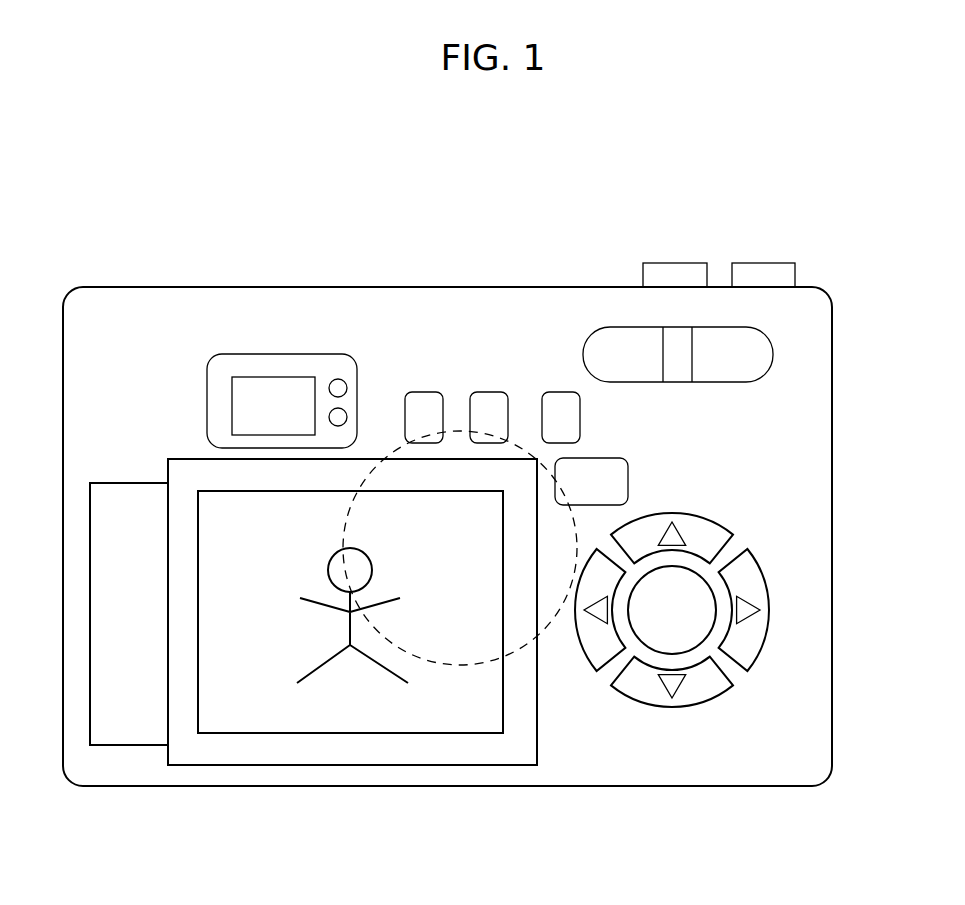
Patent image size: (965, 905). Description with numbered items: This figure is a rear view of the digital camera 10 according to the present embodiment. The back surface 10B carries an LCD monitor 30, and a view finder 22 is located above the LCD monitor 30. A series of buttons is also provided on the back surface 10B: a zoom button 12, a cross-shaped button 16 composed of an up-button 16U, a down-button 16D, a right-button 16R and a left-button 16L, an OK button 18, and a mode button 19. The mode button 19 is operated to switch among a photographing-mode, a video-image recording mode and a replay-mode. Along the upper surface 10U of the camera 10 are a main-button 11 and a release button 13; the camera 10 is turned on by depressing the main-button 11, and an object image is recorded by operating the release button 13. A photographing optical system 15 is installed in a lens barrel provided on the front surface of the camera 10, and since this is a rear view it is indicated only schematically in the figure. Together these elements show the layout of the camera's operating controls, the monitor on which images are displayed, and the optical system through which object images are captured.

The digital camera 10 is at (851, 276).
The upper surface 10U is at (402, 286).
The back surface 10B is at (805, 697).
The main-button 11 is at (764, 263).
The zoom button 12 is at (773, 350).
The release button 13 is at (678, 263).
The photographing optical system 15 is at (523, 440).
The cross-shaped button 16 is at (725, 698).
The up-button 16U is at (703, 518).
The right-button 16R is at (760, 570).
The down-button 16D is at (673, 706).
The left-button 16L is at (580, 648).
The OK button 18 is at (692, 630).
The mode button 19 is at (628, 481).
The view finder 22 is at (276, 377).
The LCD monitor 30 is at (355, 735).